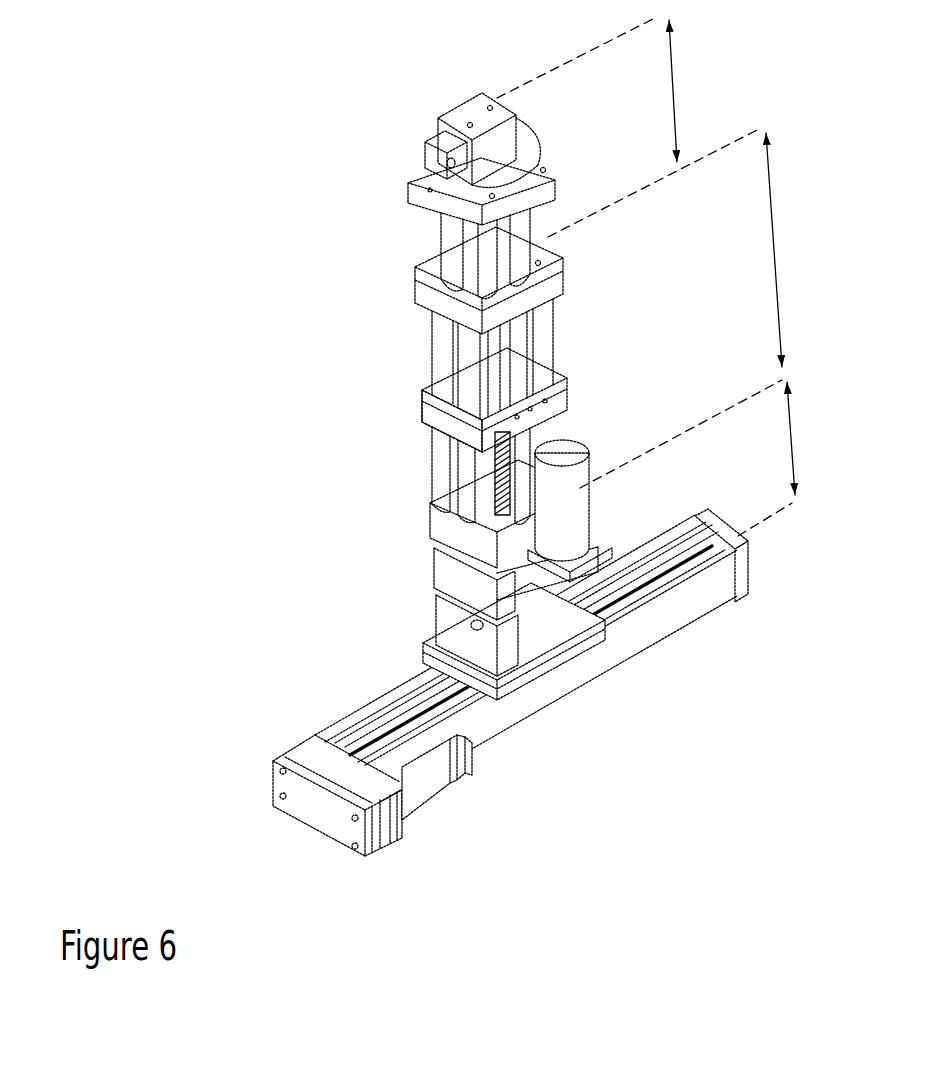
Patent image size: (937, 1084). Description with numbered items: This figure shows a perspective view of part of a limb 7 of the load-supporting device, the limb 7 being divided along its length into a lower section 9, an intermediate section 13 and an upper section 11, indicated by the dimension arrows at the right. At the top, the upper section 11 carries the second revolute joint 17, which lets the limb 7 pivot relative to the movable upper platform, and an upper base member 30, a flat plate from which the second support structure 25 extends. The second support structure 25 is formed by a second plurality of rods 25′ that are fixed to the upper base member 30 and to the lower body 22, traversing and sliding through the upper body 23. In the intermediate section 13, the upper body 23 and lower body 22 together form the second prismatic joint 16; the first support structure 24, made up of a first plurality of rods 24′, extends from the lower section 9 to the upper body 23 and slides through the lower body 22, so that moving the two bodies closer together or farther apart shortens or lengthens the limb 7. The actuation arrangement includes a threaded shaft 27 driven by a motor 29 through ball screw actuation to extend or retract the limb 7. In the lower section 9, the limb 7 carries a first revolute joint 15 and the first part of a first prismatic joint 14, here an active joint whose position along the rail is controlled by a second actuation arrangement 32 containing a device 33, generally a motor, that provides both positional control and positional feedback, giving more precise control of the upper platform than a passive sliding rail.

The limb 7 is at (590, 290).
The second revolute joint 17 is at (443, 158).
The upper base member 30 is at (423, 205).
The second support structure 25 is at (443, 243).
The second plurality of rods 25′ is at (487, 262).
The upper body 23 is at (447, 320).
The first support structure 24 is at (438, 470).
The first plurality of rods 24′ is at (440, 485).
The second prismatic joint 16 is at (415, 408).
The lower body 22 is at (455, 431).
The shaft 27 is at (497, 453).
The motor 29 is at (562, 452).
The first revolute joint 15 is at (470, 615).
The first prismatic joint 14 is at (450, 683).
The second actuation arrangement 32 is at (530, 705).
The device 33 is at (420, 772).
The upper section 11 is at (627, 127).
The intermediate section 13 is at (784, 250).
The lower section 9 is at (693, 458).